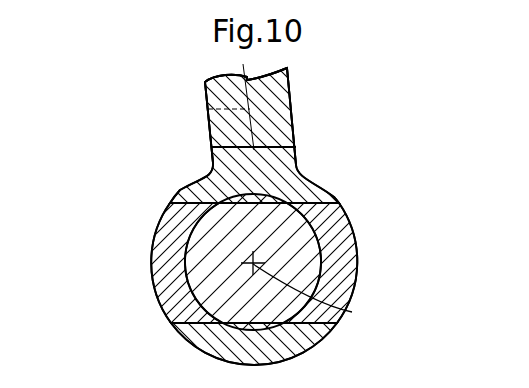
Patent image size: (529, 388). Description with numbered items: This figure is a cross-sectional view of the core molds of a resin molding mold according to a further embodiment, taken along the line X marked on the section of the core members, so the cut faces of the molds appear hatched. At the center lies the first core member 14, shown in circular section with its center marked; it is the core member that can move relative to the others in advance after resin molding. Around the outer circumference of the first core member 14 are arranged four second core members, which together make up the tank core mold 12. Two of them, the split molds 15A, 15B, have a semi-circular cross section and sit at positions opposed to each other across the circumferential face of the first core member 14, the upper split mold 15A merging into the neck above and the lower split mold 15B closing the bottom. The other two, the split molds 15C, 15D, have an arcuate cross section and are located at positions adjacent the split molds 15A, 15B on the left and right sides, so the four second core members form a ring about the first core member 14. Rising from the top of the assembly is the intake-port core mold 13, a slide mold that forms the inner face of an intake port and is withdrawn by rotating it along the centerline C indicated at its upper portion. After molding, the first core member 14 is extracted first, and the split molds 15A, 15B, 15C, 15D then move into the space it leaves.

The core mold 12 is at (375, 281).
The intake-port core mold 13 is at (296, 102).
The first core member 14 is at (202, 279).
The split mold 15A is at (300, 181).
The split mold 15B is at (194, 340).
The split mold 15C is at (156, 240).
The split mold 15D is at (350, 233).
The centerline C is at (207, 108).
The section line X- X is at (312, 296).